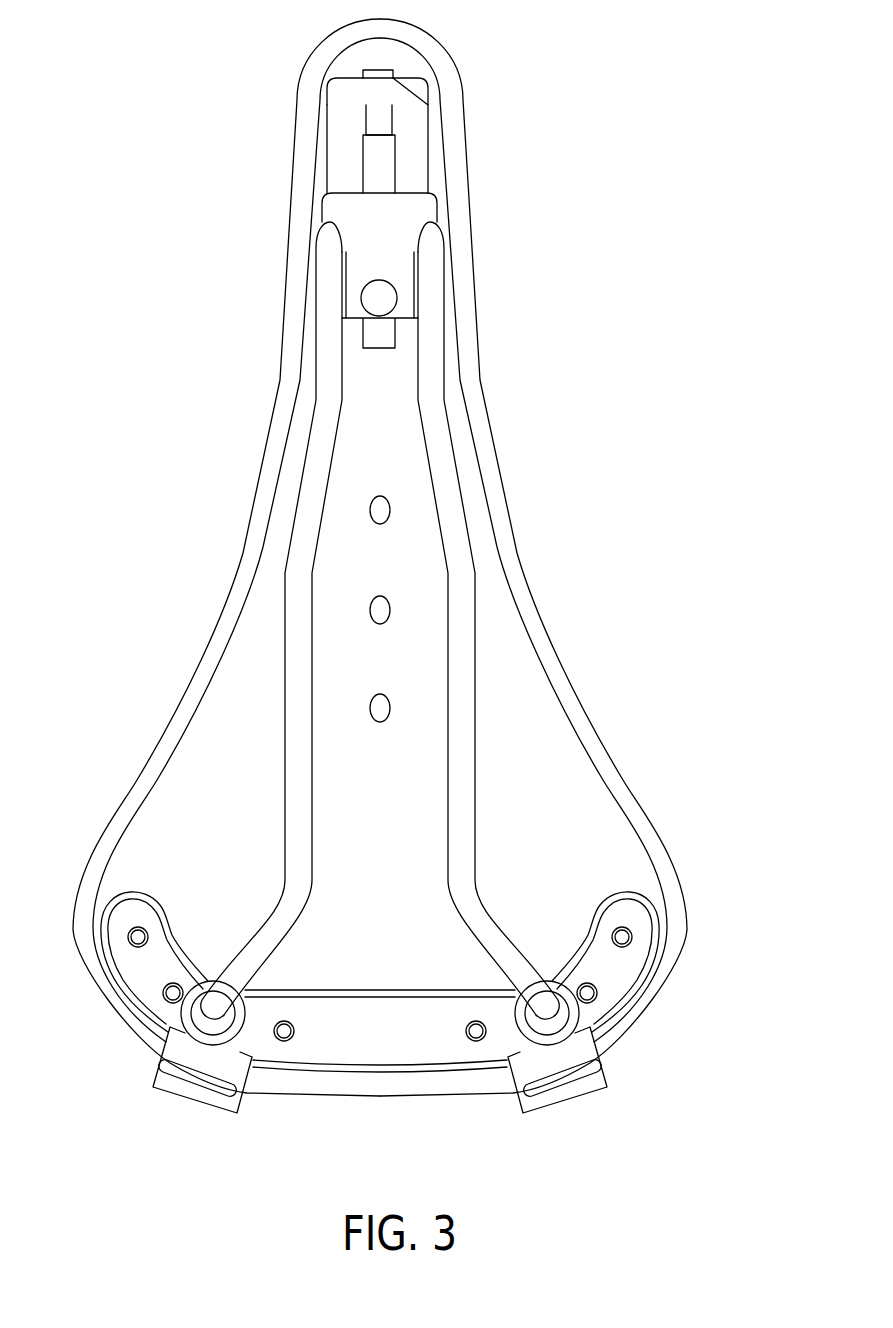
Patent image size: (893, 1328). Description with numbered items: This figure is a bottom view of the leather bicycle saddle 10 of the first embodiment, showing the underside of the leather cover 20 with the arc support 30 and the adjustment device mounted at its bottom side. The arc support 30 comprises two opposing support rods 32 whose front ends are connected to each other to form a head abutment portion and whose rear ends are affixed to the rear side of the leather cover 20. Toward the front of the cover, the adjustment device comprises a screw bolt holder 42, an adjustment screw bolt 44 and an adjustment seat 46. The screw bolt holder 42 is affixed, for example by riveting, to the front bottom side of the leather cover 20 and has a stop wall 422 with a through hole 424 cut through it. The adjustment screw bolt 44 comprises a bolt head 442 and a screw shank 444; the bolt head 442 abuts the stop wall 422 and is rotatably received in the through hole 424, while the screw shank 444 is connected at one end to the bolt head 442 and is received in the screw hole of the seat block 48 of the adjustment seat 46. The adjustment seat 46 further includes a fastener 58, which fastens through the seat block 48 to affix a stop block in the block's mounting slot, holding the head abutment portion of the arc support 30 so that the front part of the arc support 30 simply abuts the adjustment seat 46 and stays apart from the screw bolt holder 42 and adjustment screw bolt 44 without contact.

The leather bicycle saddle 10 is at (95, 108).
The leather cover 20 is at (243, 556).
The arc support 30 is at (663, 623).
The support rods 32 is at (296, 787).
The screw bolt holder 42 is at (532, 2).
The stop wall 422 is at (420, 78).
The through hole 424 is at (398, 78).
The adjustment screw bolt 44 is at (209, 42).
The bolt head 442 is at (363, 73).
The screw shank 444 is at (363, 164).
The adjustment seat 46 is at (572, 208).
The seat block 48 is at (403, 206).
The fastener 58 is at (381, 302).